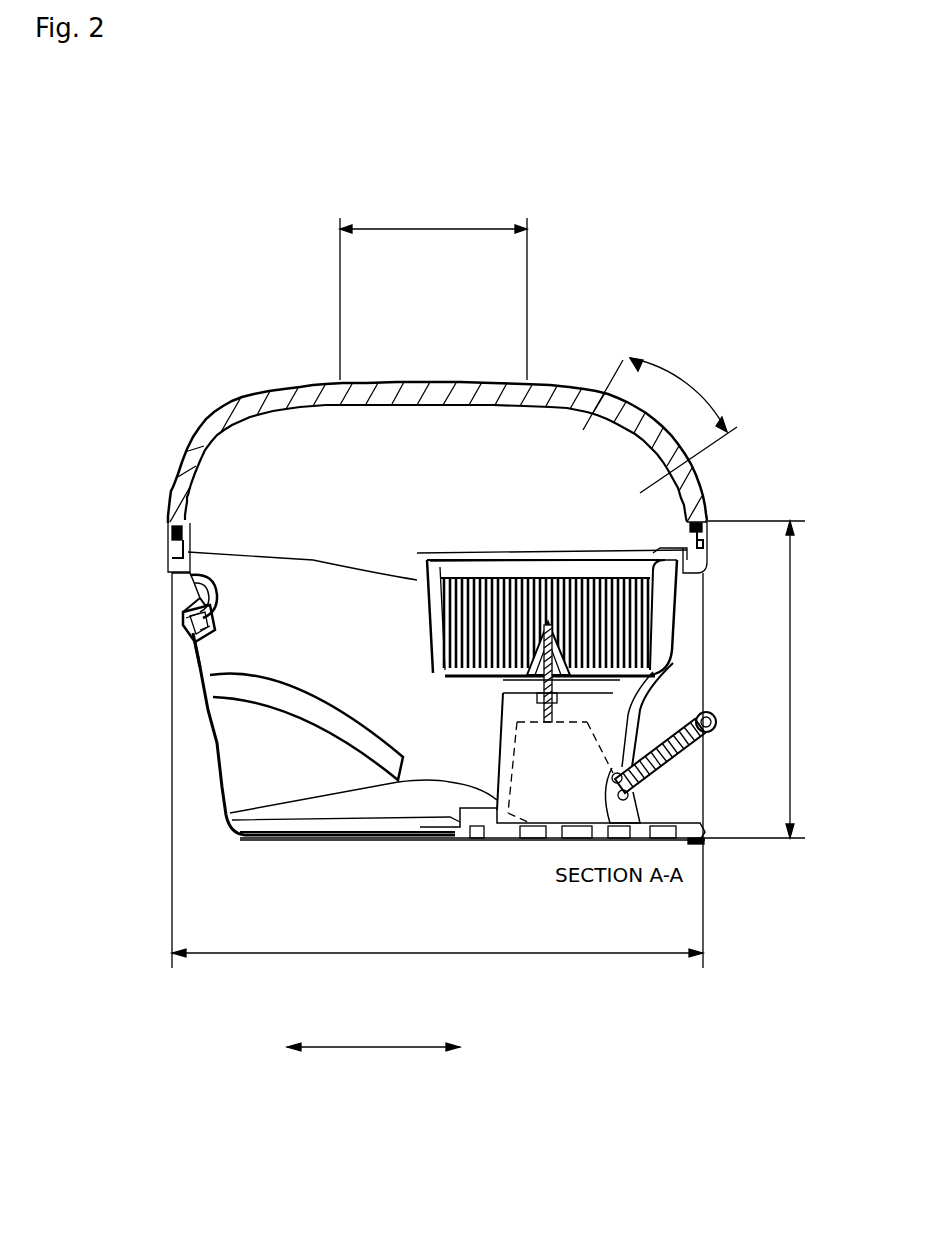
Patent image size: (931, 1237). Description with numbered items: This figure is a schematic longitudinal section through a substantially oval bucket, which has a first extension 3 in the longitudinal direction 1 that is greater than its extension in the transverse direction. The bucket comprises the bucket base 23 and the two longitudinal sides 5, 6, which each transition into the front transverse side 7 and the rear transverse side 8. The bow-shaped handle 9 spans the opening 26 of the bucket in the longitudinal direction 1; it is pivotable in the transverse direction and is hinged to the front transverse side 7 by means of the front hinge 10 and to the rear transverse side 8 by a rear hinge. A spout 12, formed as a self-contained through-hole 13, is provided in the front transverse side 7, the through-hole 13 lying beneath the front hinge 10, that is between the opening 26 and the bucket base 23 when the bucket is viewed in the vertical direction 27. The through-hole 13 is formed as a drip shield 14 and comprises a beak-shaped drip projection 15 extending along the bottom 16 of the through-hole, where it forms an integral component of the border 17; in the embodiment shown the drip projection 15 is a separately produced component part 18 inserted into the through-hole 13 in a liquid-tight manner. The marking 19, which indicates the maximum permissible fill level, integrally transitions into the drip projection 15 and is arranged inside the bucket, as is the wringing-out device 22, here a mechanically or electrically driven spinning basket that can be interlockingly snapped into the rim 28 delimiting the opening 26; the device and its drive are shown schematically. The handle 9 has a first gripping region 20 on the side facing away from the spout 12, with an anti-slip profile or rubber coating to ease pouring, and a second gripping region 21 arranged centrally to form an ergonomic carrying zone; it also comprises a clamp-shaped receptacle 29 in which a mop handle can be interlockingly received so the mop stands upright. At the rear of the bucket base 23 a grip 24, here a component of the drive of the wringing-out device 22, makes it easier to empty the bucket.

The longitudinal direction 1 is at (375, 1047).
The first extension 3 is at (462, 953).
The longitudinal side 5 is at (215, 742).
The longitudinal side 6 is at (380, 622).
The front transverse side 7 is at (385, 665).
The rear transverse side 8 is at (675, 615).
The handle 9 is at (578, 386).
The front hinge 10 is at (173, 528).
The spout 12 is at (150, 579).
The through-hole 13 is at (207, 593).
The drip shield 14 is at (180, 621).
The drip projection 15 is at (193, 615).
The bottom of the through-hole 16 is at (205, 628).
The border 17 is at (223, 573).
The component part 18 is at (195, 620).
The marking 19 is at (188, 681).
The first gripping region 20 is at (673, 378).
The second gripping region 21 is at (428, 229).
The wringing-out device 22 is at (505, 553).
The bucket base 23 is at (427, 840).
The grip 24 is at (663, 833).
The opening 26 is at (365, 538).
The vertical direction 27 is at (790, 690).
The rim 28 is at (313, 560).
The clamp-shaped receptacle 29 is at (320, 368).